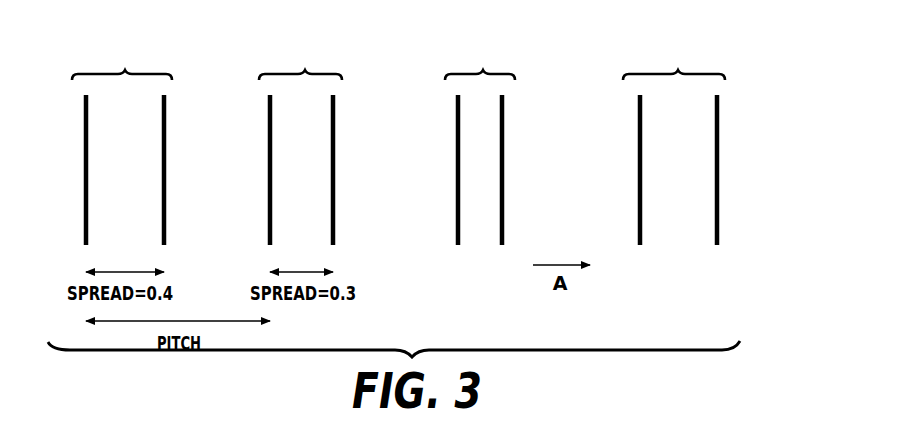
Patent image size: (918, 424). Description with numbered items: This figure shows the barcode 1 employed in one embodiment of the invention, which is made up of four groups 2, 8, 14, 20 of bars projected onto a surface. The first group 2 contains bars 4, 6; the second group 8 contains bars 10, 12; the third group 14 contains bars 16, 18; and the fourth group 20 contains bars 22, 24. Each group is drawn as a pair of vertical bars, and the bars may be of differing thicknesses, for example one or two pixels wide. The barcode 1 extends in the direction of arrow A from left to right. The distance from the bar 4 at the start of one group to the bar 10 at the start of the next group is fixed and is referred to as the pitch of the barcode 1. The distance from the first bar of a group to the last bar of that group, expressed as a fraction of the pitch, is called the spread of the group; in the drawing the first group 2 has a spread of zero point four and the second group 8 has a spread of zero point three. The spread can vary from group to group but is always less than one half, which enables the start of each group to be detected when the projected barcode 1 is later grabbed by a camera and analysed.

The barcode 1 is at (578, 33).
The group of bars 2 is at (111, 143).
The bar 4 is at (86, 152).
The bar 6 is at (164, 152).
The group of bars 8 is at (285, 143).
The bar 10 is at (270, 152).
The bar 12 is at (333, 152).
The group of bars 14 is at (465, 143).
The bar 16 is at (458, 152).
The bar 18 is at (502, 152).
The group of bars 20 is at (661, 143).
The bar 22 is at (640, 152).
The bar 24 is at (717, 152).